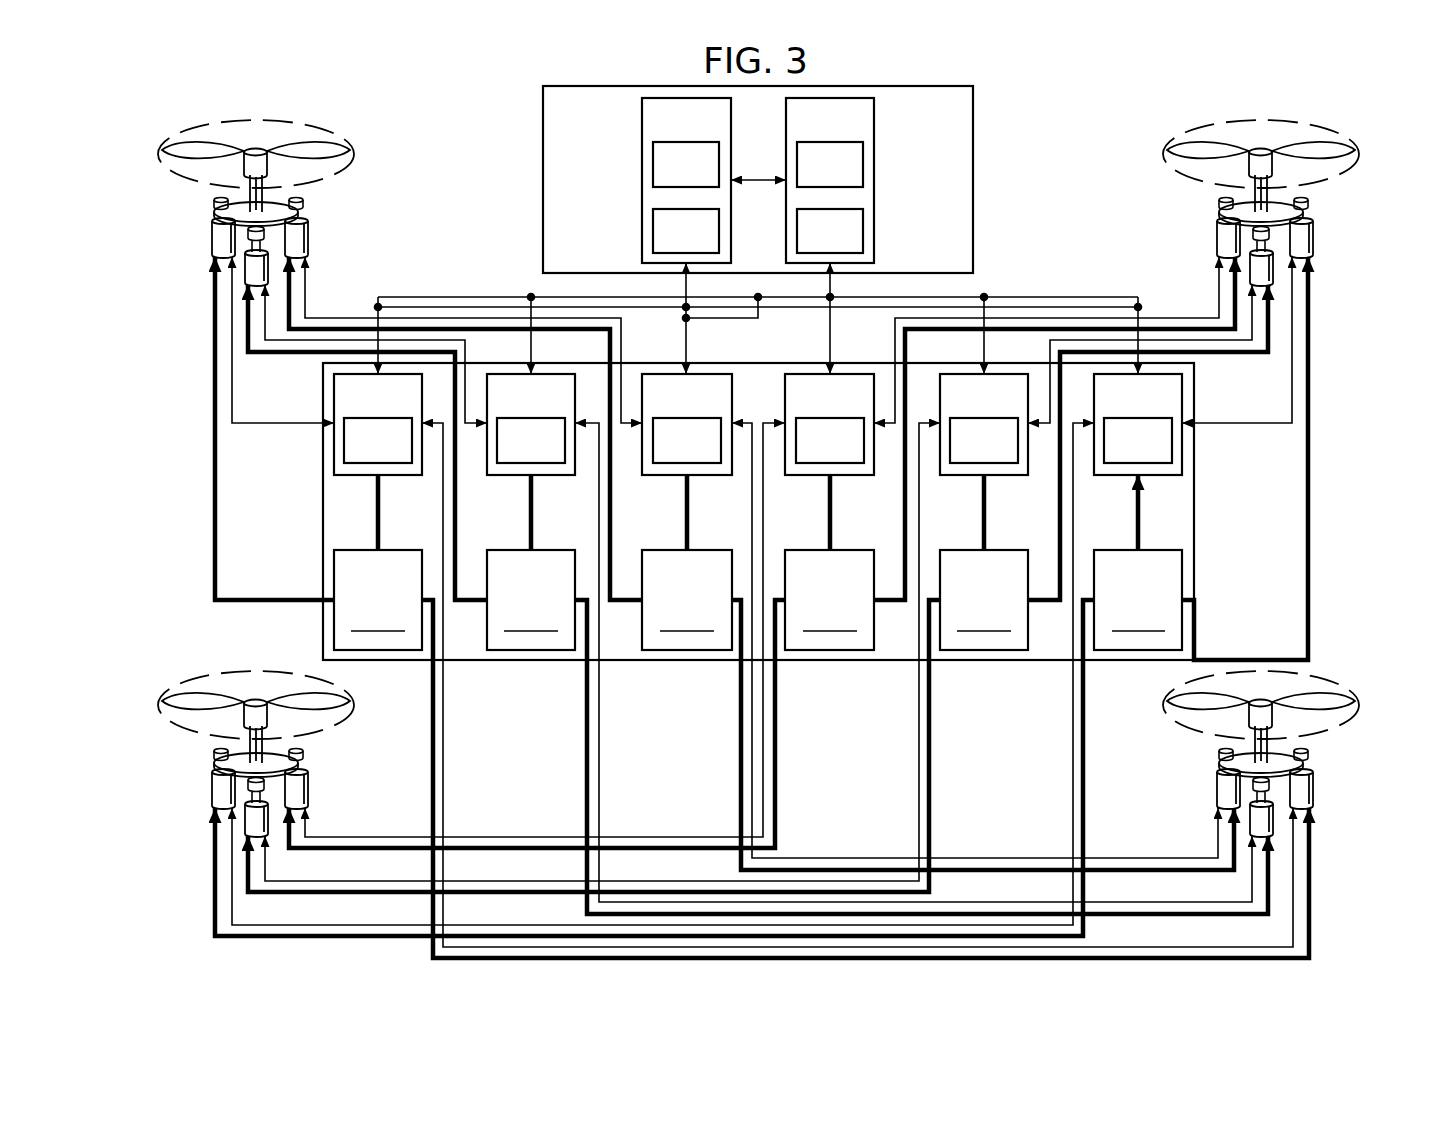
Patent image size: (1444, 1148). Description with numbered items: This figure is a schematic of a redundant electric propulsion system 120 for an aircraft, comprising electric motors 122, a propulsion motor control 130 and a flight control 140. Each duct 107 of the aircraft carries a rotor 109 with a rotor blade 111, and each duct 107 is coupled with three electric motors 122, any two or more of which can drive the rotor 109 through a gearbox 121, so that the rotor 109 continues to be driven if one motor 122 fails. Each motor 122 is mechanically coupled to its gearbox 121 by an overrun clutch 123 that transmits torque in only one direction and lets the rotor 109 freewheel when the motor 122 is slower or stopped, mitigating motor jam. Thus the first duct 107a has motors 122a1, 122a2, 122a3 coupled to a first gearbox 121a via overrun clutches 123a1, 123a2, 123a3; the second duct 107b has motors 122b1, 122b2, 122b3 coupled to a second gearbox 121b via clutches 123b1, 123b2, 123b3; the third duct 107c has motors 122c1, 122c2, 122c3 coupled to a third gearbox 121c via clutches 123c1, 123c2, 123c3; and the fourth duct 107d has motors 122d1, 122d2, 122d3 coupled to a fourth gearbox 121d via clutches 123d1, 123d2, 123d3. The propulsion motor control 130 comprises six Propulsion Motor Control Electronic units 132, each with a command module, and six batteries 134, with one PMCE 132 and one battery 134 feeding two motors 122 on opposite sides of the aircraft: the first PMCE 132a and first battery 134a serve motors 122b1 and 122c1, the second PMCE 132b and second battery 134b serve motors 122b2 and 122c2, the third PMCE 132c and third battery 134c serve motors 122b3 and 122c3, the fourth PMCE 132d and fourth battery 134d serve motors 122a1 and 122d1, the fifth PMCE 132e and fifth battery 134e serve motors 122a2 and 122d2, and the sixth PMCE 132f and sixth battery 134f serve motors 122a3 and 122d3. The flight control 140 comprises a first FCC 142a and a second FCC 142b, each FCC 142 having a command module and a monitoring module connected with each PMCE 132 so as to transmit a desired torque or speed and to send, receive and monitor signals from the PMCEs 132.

The duct 107 is at (384, 147).
The first duct 107a is at (170, 592).
The second duct 107b is at (1352, 592).
The third duct 107c is at (316, 110).
The fourth duct 107d is at (1200, 112).
The rotor 109 is at (257, 148).
The rotor blade 111 is at (200, 143).
The redundant electric propulsion system 120 is at (500, 100).
The gearbox 121 is at (436, 200).
The first gearbox 121a is at (277, 761).
The second gearbox 121b is at (1282, 761).
The third gearbox 121c is at (277, 210).
The fourth gearbox 121d is at (1282, 210).
The electric motor 122 is at (437, 265).
The first motor 122a1 is at (306, 792).
The second motor 122a2 is at (250, 825).
The third motor 122a3 is at (216, 797).
The first motor 122b1 is at (1311, 792).
The second motor 122b2 is at (1268, 826).
The third motor 122b3 is at (1221, 797).
The first motor 122c1 is at (216, 246).
The second motor 122c2 is at (250, 274).
The third motor 122c3 is at (306, 241).
The first motor 122d1 is at (1221, 246).
The second motor 122d2 is at (1268, 275).
The third motor 122d3 is at (1311, 241).
The overrun clutch 123 is at (437, 233).
The first overrun clutch 123a1 is at (300, 750).
The second overrun clutch 123a2 is at (252, 780).
The third overrun clutch 123a3 is at (219, 751).
The first overrun clutch 123b1 is at (1305, 750).
The second overrun clutch 123b2 is at (1257, 780).
The third overrun clutch 123b3 is at (1224, 751).
The first overrun clutch 123c1 is at (219, 200).
The second overrun clutch 123c2 is at (252, 229).
The third overrun clutch 123c3 is at (300, 199).
The first overrun clutch 123d1 is at (1224, 200).
The second overrun clutch 123d2 is at (1257, 229).
The third overrun clutch 123d3 is at (1305, 199).
The propulsion motor control 130 is at (1198, 469).
The Propulsion Motor Control Electronic unit (PMCE) 132 is at (330, 383).
The first PMCE 132a is at (398, 476).
The second PMCE 132b is at (512, 476).
The third PMCE 132c is at (664, 476).
The fourth PMCE 132d is at (845, 476).
The fifth PMCE 132e is at (1000, 476).
The sixth PMCE 132f is at (1116, 476).
The battery 134 is at (1194, 562).
The first battery 134a is at (378, 600).
The second battery 134b is at (531, 600).
The third battery 134c is at (687, 600).
The fourth battery 134d is at (829, 600).
The fifth battery 134e is at (984, 600).
The sixth battery 134f is at (1138, 600).
The flight control 140 is at (976, 139).
The Flight Control Computer (FCC) 142 is at (631, 198).
The first FCC 142a is at (642, 170).
The second FCC 142b is at (874, 170).